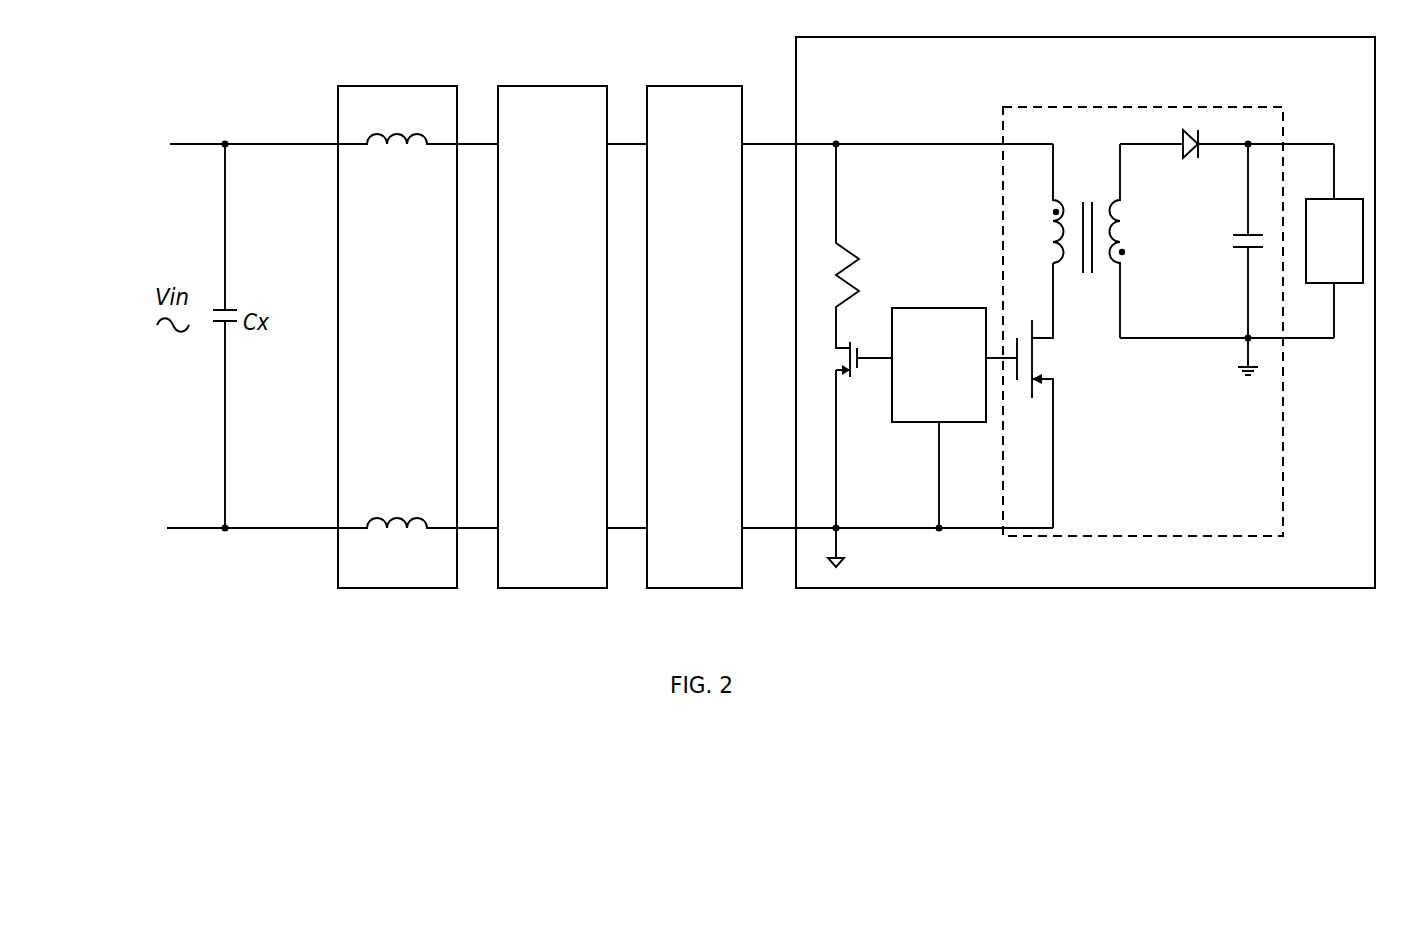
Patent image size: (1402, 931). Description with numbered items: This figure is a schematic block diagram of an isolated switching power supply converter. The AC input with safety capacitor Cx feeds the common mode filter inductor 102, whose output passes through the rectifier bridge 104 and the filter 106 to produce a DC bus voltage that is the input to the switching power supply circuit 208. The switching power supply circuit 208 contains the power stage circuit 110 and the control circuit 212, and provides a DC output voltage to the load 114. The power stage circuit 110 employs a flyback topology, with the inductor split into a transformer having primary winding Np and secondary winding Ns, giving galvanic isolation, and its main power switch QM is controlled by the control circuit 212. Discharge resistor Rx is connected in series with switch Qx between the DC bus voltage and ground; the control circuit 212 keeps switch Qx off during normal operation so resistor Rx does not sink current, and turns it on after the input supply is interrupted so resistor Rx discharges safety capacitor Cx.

The common mode filter inductor 102 is at (415, 387).
The rectifier bridge 104 is at (568, 373).
The filter 106 is at (711, 364).
The switching power supply circuit 208 is at (1173, 74).
The control circuit 212 is at (957, 407).
The power stage circuit 110 is at (1135, 536).
The load 114 is at (1350, 266).